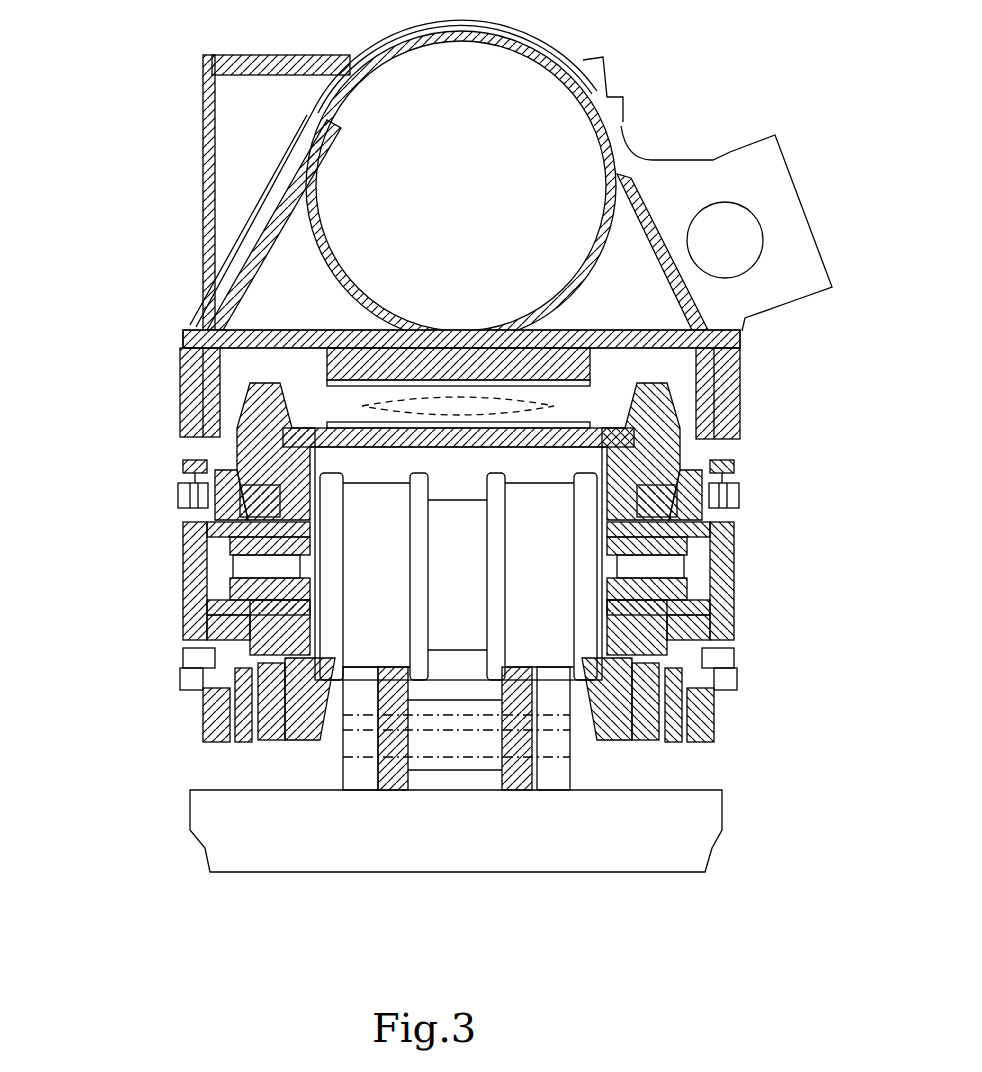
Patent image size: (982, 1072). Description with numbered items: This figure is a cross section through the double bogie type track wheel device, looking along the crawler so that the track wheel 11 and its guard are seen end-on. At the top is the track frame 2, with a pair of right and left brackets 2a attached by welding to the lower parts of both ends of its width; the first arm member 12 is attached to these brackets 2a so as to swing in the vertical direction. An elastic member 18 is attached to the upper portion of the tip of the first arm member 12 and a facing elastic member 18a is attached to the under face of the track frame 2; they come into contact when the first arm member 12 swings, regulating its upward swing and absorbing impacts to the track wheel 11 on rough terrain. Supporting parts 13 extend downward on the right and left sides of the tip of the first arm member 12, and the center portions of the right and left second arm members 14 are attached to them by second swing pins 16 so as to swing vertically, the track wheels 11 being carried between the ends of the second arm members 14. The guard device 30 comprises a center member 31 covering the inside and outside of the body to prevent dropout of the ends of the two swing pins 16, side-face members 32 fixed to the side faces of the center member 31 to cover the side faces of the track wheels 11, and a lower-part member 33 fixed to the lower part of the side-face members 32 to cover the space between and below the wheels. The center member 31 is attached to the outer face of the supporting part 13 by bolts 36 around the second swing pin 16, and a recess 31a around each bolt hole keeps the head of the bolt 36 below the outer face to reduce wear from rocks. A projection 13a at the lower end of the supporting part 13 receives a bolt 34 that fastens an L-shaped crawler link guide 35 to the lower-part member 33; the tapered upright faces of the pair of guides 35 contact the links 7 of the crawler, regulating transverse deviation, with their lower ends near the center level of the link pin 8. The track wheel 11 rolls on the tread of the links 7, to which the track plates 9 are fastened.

The track frame 2 is at (206, 184).
The bracket 2a is at (186, 352).
The elastic member 18 is at (340, 412).
The elastic member 18a is at (356, 404).
The first arm member 12 is at (250, 400).
The second arm member 14 is at (232, 468).
The bolt 36 is at (177, 505).
The recess 31a is at (180, 512).
The center member 31 is at (183, 545).
The guard device 30 is at (150, 557).
The second swing pin 16 is at (192, 582).
The supporting part 13 is at (183, 650).
The projection 13a is at (187, 670).
The side-face member 32 is at (180, 682).
The bolt 34 is at (200, 706).
The lower-part member 33 is at (205, 730).
The crawler link guide 35 is at (270, 750).
The track wheel 11 is at (371, 645).
The link 7 is at (348, 780).
The link pin 8 is at (572, 777).
The track plate 9 is at (704, 816).